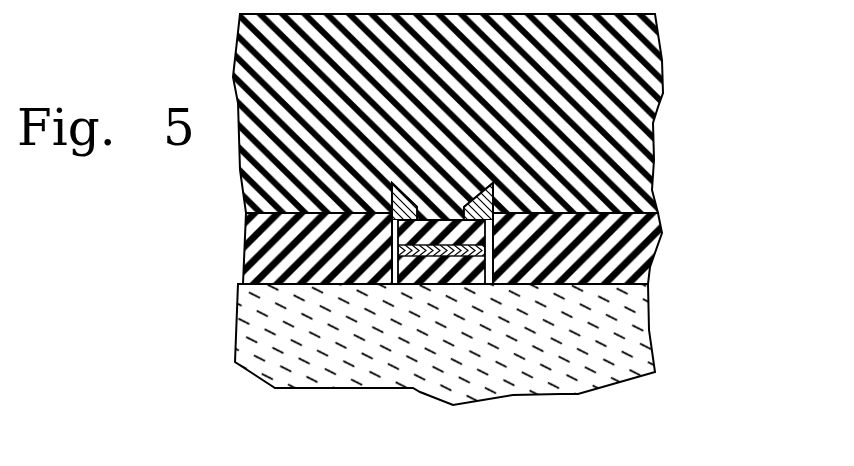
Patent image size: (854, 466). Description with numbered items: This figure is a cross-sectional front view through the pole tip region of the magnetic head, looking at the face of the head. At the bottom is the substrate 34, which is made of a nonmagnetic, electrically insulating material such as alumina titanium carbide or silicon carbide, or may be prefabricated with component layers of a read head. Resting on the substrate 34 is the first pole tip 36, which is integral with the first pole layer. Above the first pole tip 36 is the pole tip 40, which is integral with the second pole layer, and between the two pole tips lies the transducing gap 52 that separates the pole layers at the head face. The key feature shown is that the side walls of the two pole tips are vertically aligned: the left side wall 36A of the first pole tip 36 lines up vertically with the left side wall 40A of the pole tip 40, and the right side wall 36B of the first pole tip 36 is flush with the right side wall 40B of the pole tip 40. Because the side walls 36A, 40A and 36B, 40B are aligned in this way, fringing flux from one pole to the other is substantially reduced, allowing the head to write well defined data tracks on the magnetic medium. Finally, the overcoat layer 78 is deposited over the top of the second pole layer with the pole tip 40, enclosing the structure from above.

The overcoat layer 78 is at (632, 71).
The pole tip 40 is at (449, 248).
The left side wall 40A is at (398, 237).
The right side wall 40B is at (493, 236).
The first pole tip 36 is at (428, 272).
The left side wall 36A is at (394, 262).
The right side wall 36B is at (492, 267).
The substrate 34 is at (632, 317).
The transducing gap 52 is at (318, 284).